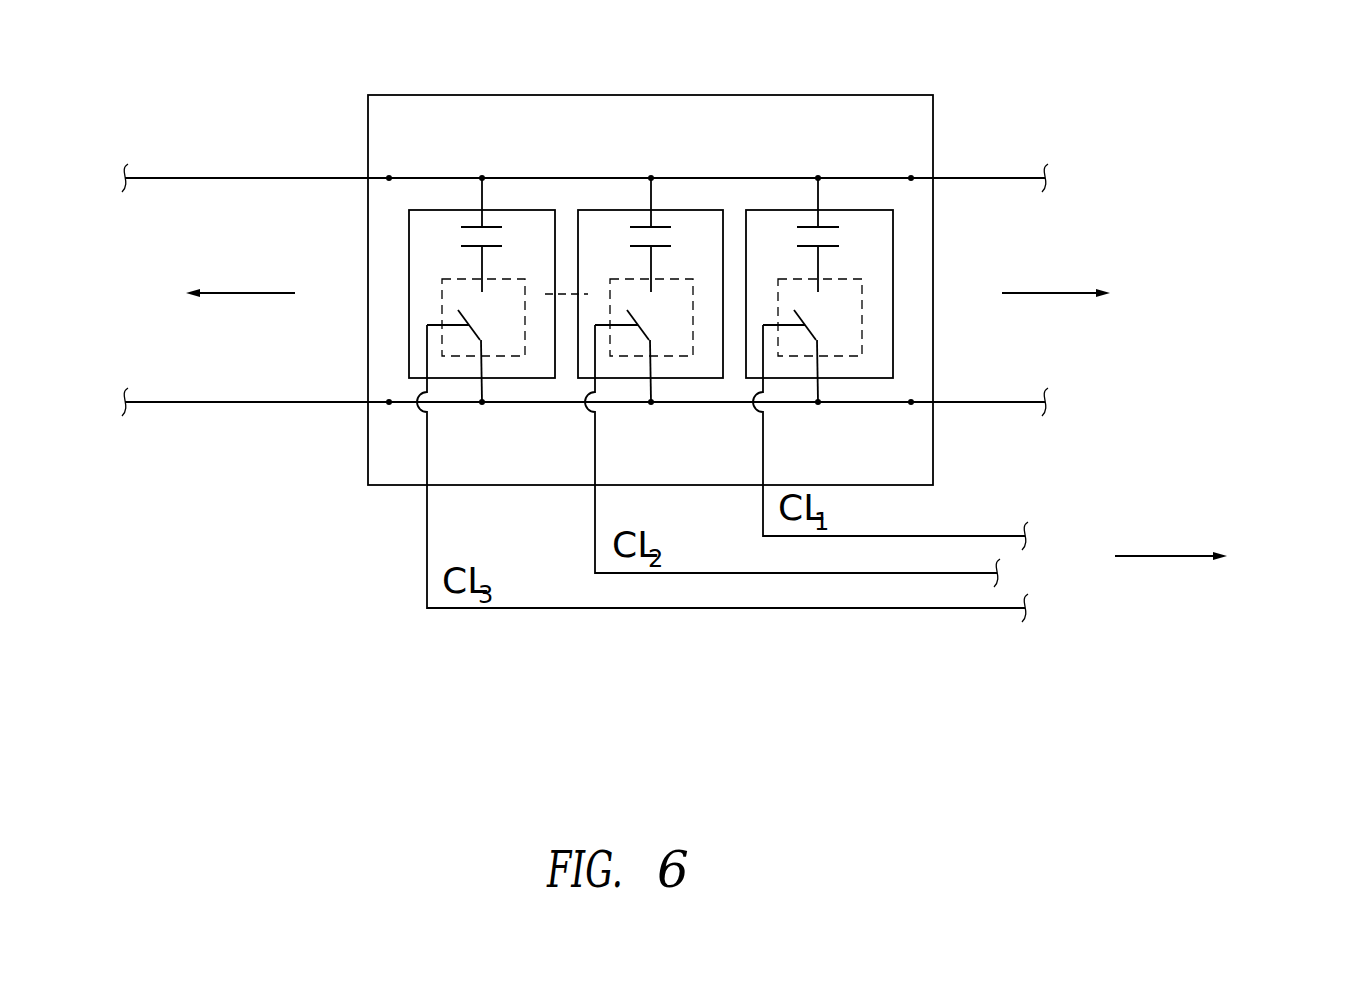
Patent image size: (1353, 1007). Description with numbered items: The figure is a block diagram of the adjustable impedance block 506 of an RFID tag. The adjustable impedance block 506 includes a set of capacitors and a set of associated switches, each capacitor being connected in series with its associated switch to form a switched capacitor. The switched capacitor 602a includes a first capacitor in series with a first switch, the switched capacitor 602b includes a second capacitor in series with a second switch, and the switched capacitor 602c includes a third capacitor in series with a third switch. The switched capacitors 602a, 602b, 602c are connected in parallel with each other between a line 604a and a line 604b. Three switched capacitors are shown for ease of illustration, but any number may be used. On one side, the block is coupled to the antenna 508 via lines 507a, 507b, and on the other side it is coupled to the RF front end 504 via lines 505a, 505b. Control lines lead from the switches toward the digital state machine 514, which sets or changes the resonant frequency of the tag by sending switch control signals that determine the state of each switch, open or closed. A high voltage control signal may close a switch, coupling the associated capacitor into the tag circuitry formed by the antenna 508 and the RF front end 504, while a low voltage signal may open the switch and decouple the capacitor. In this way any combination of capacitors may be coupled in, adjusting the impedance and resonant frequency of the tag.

The adjustable impedance block 506 is at (680, 95).
The line 604a is at (530, 178).
The line 604b is at (530, 403).
The line 507a is at (218, 178).
The line 507b is at (242, 403).
The line 505a is at (997, 178).
The line 505b is at (988, 402).
The switched capacitor 602a is at (855, 380).
The switched capacitor 602b is at (678, 380).
The switched capacitor 602c is at (457, 380).
The antenna 508 is at (254, 294).
The RF front end 504 is at (1081, 294).
The digital state machine 514 is at (1200, 556).